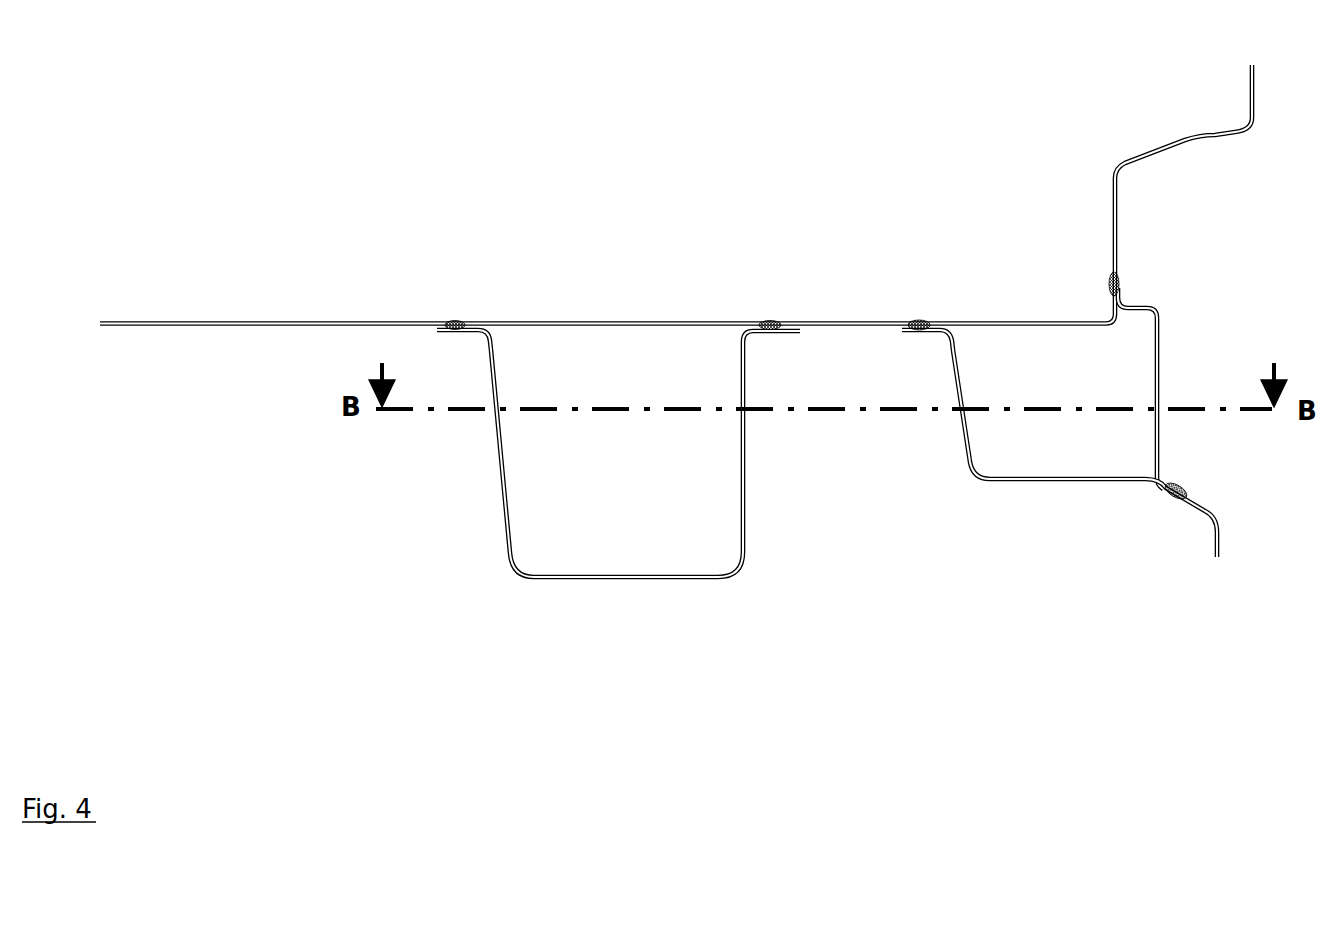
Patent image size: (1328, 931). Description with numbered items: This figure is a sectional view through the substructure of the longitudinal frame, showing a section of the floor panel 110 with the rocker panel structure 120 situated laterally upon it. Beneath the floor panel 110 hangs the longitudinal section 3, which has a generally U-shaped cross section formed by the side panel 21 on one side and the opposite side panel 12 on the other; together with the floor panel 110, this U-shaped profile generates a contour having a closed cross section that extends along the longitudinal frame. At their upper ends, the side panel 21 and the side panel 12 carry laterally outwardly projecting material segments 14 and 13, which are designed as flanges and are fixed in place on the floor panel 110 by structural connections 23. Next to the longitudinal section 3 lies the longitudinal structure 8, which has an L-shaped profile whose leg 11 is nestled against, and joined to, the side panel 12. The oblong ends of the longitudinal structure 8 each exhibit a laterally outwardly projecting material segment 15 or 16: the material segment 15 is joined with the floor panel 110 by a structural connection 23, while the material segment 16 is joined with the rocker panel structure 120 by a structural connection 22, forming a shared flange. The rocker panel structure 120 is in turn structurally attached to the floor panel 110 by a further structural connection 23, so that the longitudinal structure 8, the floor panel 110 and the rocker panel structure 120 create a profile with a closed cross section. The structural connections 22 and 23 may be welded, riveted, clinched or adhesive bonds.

The floor panel 110 is at (325, 322).
The rocker panel structure 120 is at (1148, 150).
The structural connection 23 is at (453, 322).
The material segment 14 is at (460, 331).
The material segment 13 is at (790, 337).
The material segment 15 is at (912, 332).
The side panel 21 is at (505, 475).
The longitudinal section 3 is at (595, 524).
The side panel 12 is at (740, 482).
The leg 11 is at (955, 374).
The longitudinal structure 8 is at (1032, 494).
The material segment 16 is at (1158, 484).
The structural connection 22 is at (1176, 497).